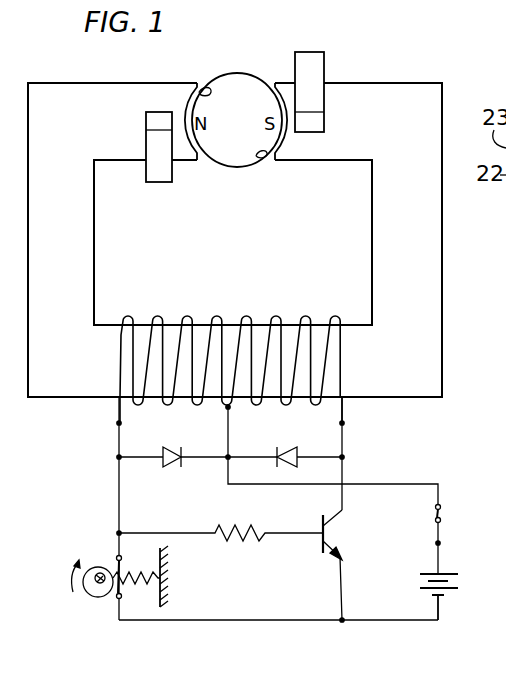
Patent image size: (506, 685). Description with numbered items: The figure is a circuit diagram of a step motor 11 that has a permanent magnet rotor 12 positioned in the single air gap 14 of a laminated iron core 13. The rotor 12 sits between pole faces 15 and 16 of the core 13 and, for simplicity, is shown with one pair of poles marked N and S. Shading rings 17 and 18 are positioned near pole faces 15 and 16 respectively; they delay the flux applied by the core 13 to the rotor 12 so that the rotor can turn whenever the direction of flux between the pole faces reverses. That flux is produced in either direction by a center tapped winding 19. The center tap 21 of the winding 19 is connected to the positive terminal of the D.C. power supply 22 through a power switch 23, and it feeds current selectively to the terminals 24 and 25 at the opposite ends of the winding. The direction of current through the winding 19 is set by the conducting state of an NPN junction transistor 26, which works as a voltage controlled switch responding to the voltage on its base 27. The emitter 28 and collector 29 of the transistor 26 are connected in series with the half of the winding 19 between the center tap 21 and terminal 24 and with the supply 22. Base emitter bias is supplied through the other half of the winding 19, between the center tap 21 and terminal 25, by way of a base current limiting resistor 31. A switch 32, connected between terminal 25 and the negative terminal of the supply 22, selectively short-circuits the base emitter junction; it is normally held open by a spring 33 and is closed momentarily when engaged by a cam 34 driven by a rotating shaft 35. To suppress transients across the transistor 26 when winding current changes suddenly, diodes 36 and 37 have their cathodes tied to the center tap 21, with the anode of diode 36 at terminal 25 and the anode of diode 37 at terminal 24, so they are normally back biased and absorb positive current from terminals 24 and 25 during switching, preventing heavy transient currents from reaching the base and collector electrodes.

The step motor 11 is at (442, 69).
The permanent magnet rotor 12 is at (246, 135).
The laminated iron core 13 is at (420, 133).
The air gap 14 is at (268, 82).
The pole face 15 is at (208, 90).
The pole face 16 is at (260, 160).
The shading ring 17 is at (161, 175).
The shading ring 18 is at (305, 62).
The center tapped winding 19 is at (247, 318).
The center tap 21 is at (225, 409).
The D.C. power supply 22 is at (450, 590).
The power switch 23 is at (443, 531).
The terminal 24 is at (345, 424).
The terminal 25 is at (117, 423).
The NPN junction transistor 26 is at (340, 560).
The base 27 is at (318, 522).
The emitter 28 is at (328, 550).
The collector 29 is at (341, 512).
The base current limiting resistor 31 is at (245, 540).
The switch 32 is at (108, 560).
The spring 33 is at (136, 572).
The cam 34 is at (98, 597).
The rotating shaft 35 is at (85, 590).
The diode 36 is at (168, 467).
The diode 37 is at (314, 436).